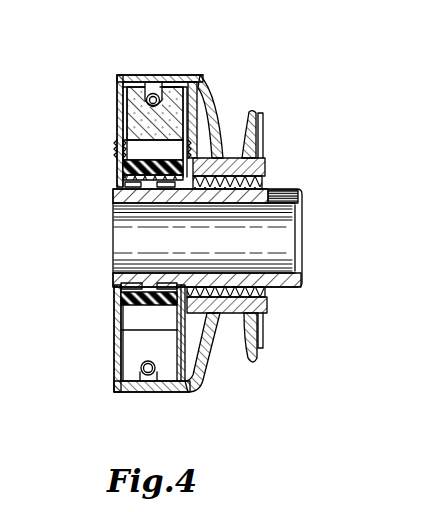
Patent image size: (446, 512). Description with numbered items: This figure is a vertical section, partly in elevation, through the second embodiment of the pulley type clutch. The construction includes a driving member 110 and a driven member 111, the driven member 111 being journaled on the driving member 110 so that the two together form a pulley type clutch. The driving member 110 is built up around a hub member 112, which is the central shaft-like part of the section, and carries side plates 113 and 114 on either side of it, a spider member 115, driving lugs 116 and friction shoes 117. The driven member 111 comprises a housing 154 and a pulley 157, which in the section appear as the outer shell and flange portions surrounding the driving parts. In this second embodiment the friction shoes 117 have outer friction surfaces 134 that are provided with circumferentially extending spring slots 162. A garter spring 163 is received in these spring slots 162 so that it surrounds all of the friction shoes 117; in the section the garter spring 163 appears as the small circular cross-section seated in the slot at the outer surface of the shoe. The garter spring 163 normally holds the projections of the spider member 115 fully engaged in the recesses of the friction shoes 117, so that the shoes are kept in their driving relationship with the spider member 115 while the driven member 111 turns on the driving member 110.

The driving member 110 is at (116, 116).
The driven member 111 is at (205, 77).
The hub member 112 is at (292, 233).
The side plate 113 is at (118, 168).
The side plate 114 is at (190, 112).
The spider member 115 is at (119, 294).
The driving lugs 116 is at (122, 147).
The friction shoes 117 is at (135, 103).
The outer friction surfaces 134 is at (130, 85).
The housing 154 is at (142, 391).
The pulley 157 is at (265, 342).
The spring slots 162 is at (169, 84).
The garter spring 163 is at (151, 93).